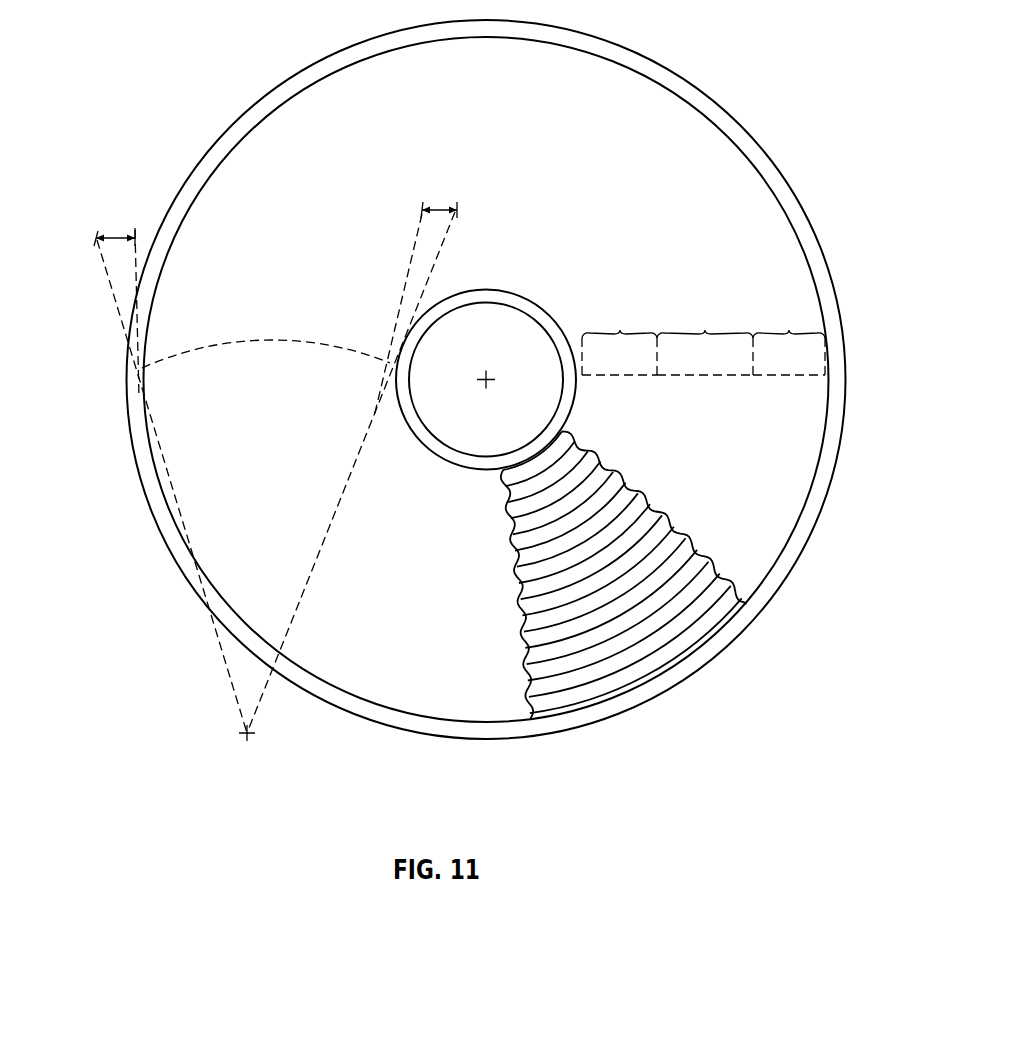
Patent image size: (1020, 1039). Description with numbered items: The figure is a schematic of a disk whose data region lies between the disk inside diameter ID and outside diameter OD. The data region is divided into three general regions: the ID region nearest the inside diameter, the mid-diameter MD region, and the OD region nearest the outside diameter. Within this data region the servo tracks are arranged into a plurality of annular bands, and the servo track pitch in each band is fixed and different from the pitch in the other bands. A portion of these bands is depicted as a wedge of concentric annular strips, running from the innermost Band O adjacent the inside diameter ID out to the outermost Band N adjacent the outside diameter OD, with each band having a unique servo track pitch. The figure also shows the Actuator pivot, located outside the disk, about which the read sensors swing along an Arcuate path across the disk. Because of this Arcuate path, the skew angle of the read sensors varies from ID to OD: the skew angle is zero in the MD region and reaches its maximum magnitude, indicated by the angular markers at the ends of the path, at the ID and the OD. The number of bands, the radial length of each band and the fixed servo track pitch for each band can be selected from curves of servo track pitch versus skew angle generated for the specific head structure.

The outside diameter OD is at (656, 75).
The inside diameter ID is at (540, 304).
The band 0 Band O is at (511, 476).
The band N Band N is at (532, 708).
The element ID region is at (619, 322).
The mid-diameter region MD region is at (705, 322).
The element OD region is at (789, 322).
The actuator pivot Actuator pivot is at (250, 736).
The arcuate path Arcuate path is at (236, 344).